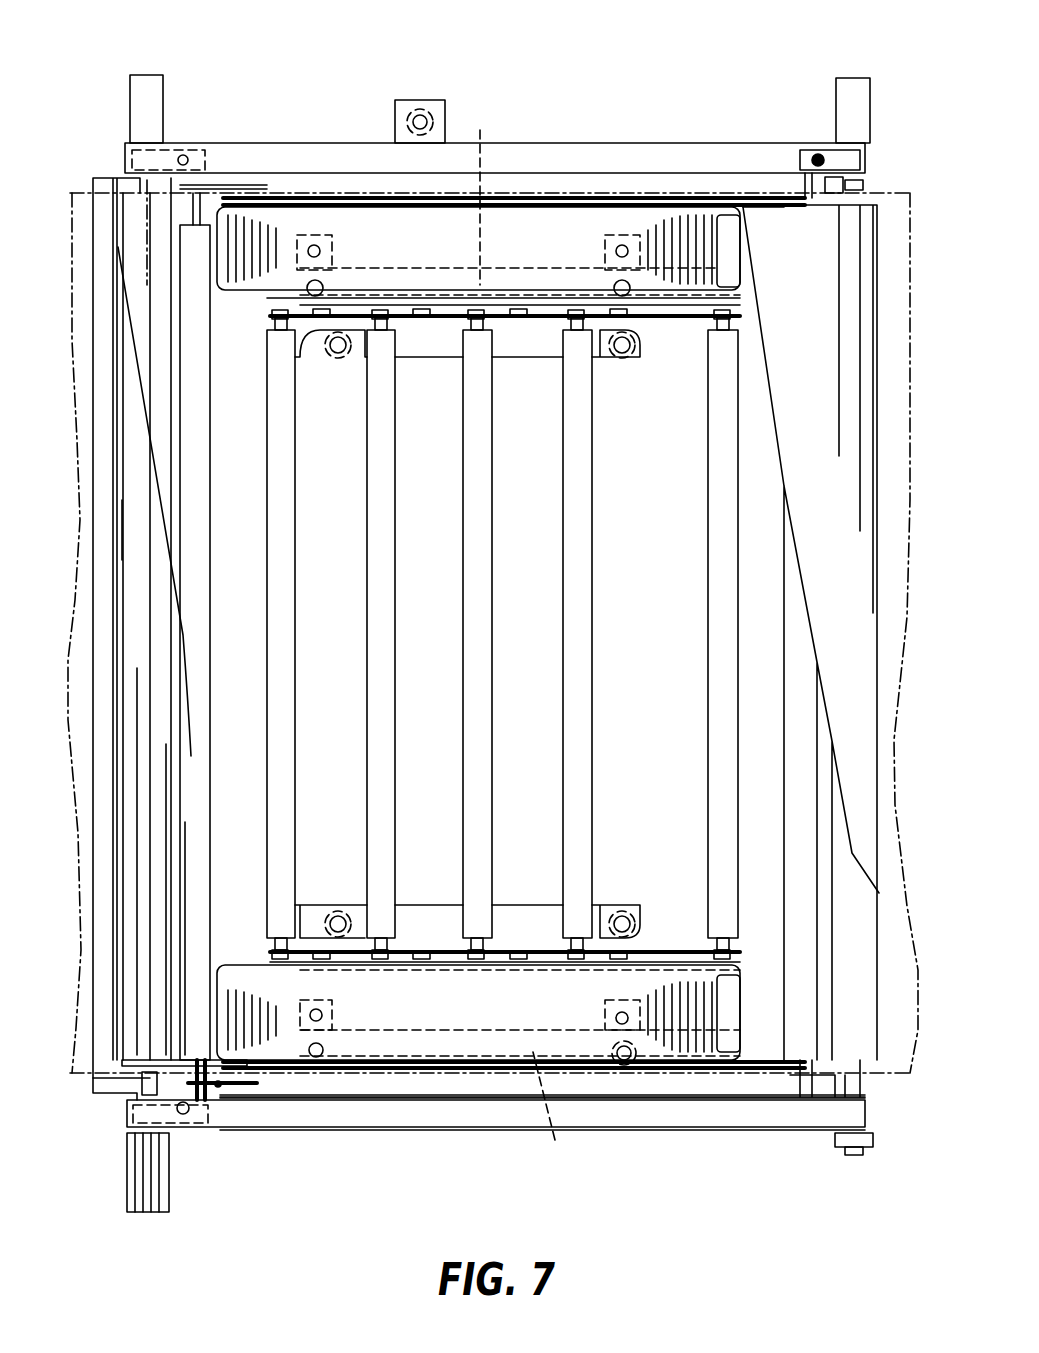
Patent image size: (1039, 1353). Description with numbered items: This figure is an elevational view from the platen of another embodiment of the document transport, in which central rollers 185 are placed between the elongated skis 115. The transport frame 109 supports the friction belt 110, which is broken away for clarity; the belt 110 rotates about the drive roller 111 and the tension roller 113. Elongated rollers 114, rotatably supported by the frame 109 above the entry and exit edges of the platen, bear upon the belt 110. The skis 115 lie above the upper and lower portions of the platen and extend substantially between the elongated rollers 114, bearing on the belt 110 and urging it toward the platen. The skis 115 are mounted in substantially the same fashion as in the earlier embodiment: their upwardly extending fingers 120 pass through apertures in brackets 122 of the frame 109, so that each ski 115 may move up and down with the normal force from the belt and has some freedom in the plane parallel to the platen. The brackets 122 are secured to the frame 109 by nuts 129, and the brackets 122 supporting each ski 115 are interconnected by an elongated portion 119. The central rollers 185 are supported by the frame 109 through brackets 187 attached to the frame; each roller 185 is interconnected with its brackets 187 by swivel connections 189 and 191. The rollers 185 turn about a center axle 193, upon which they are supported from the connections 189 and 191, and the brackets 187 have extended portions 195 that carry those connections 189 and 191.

The transport frame 109 is at (537, 121).
The friction belt 110 is at (780, 240).
The drive roller 111 is at (160, 215).
The tension roller 113 is at (860, 1060).
The elongated rollers 114 is at (200, 245).
The elongated sliders or skis 115 is at (555, 218).
The elongated portion 119 is at (520, 636).
The fingers 120 is at (610, 1020).
The brackets 122 is at (610, 997).
The nuts 129 is at (630, 1067).
The central rollers 185 is at (380, 738).
The brackets 187 is at (440, 345).
The swivel connection 189 is at (290, 340).
The swivel connection 191 is at (680, 312).
The center axle 193 is at (281, 310).
The extended portions 195 is at (320, 309).